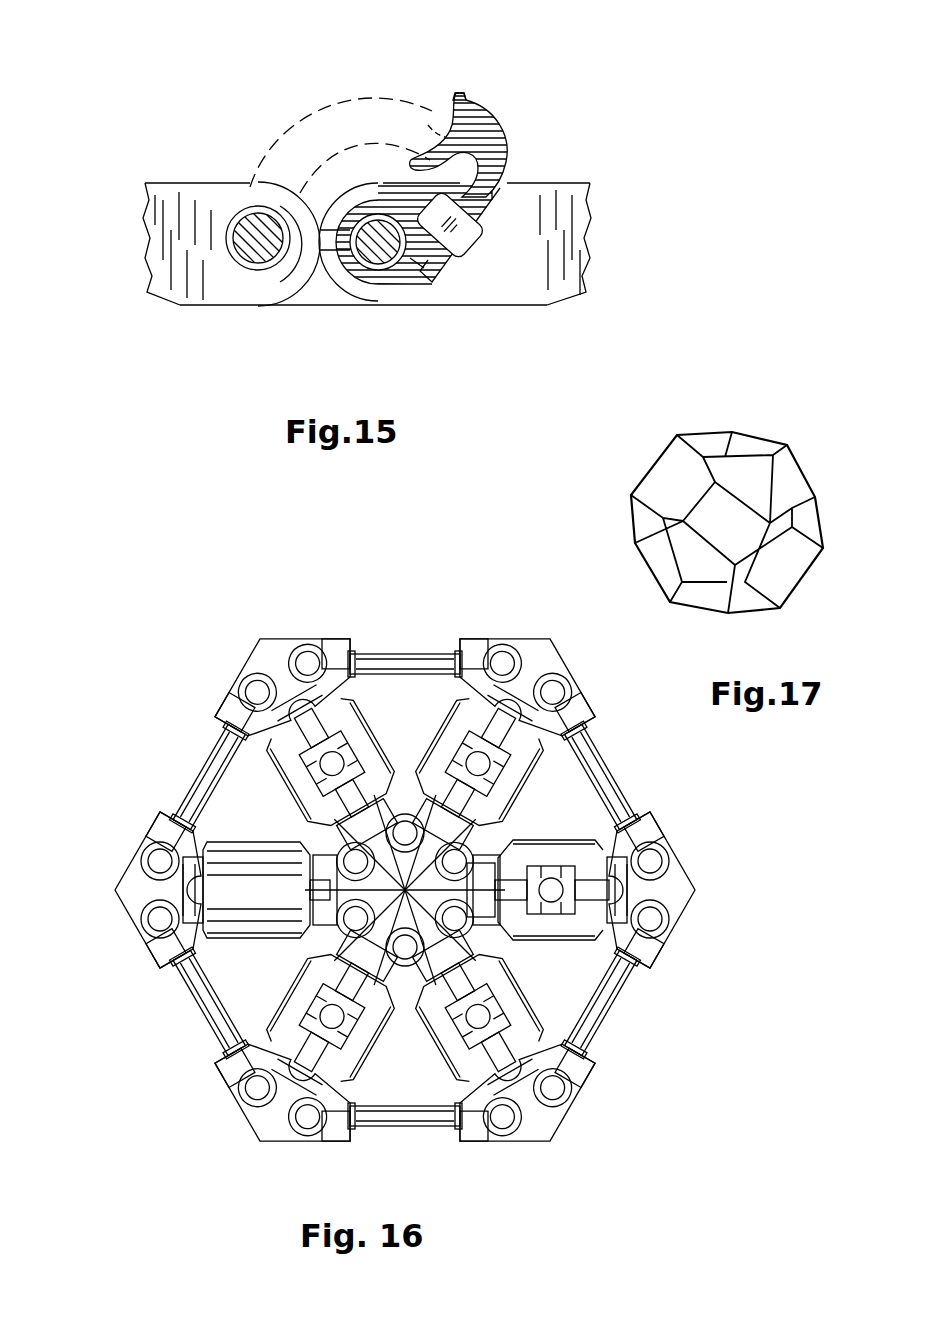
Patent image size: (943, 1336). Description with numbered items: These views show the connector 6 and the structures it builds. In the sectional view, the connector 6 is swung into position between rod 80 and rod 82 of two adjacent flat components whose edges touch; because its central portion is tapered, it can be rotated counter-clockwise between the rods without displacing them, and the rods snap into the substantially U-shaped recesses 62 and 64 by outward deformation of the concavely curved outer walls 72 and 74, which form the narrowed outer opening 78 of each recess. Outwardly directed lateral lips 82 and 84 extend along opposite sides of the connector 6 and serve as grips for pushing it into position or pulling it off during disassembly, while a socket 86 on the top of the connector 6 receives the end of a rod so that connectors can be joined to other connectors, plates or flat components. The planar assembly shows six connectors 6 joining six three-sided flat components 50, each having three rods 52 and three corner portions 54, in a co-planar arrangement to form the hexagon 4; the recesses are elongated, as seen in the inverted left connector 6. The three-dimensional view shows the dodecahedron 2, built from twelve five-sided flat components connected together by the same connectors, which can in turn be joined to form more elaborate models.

In FIG. 17, the dodecahedron 2 is at (806, 589).
In FIG. 16, the hexagon 4 is at (619, 787).
In FIG. 16, the connector 6 is at (356, 1056).
In FIG. 16, the three-sided flat component 50 is at (560, 641).
In FIG. 16, the rods 52 is at (400, 655).
In FIG. 16, the corner portions 54 is at (262, 655).
In FIG. 15, the recess 62 is at (460, 153).
In FIG. 16, the recess 62 is at (262, 842).
In FIG. 16, the recess 64 is at (277, 935).
In FIG. 15, the concavely curved outer wall 72 is at (428, 123).
In FIG. 15, the concavely curved outer wall 74 is at (380, 242).
In FIG. 15, the narrowed outer opening 78 is at (432, 128).
In FIG. 15, the rod 80 is at (267, 242).
In FIG. 15, the rod / lateral lip 82 is at (473, 93).
In FIG. 15, the lateral lip 84 is at (332, 277).
In FIG. 15, the socket 86 is at (467, 240).